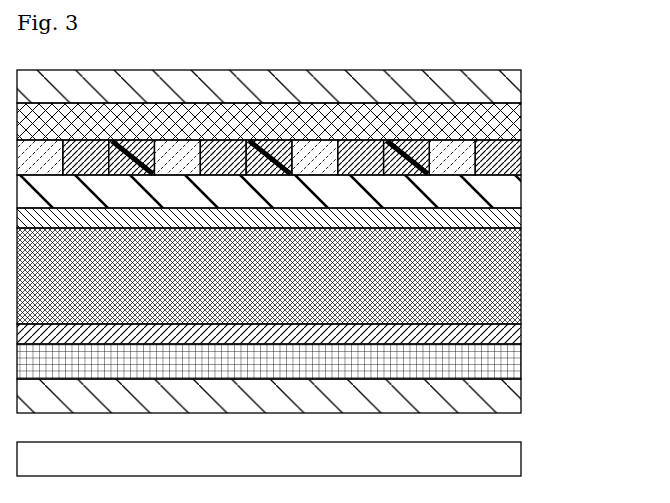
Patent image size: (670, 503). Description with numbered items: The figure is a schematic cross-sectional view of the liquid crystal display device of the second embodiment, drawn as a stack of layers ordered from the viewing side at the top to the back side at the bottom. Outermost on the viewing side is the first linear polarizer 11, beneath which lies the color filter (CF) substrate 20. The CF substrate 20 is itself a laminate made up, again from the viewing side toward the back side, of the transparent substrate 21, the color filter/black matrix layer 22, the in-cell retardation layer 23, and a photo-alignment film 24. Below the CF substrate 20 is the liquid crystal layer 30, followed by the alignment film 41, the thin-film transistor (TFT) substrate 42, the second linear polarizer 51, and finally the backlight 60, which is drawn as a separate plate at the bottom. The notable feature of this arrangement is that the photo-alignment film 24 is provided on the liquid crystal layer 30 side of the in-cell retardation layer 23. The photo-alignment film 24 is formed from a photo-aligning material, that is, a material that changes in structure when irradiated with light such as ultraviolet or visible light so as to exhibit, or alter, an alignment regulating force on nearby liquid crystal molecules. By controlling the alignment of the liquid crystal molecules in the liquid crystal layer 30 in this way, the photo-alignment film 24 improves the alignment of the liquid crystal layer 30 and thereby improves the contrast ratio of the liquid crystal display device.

The first linear polarizer 11 is at (511, 93).
The color filter (CF) substrate 20 is at (330, 169).
The transparent substrate 21 is at (521, 125).
The color filter/black matrix layer 22 is at (521, 160).
The in-cell retardation layer 23 is at (510, 195).
The photo-alignment film 24 is at (303, 218).
The liquid crystal layer 30 is at (511, 284).
The alignment film 41 is at (521, 337).
The thin-film transistor (TFT) substrate 42 is at (512, 368).
The second linear polarizer 51 is at (511, 399).
The backlight 60 is at (511, 463).